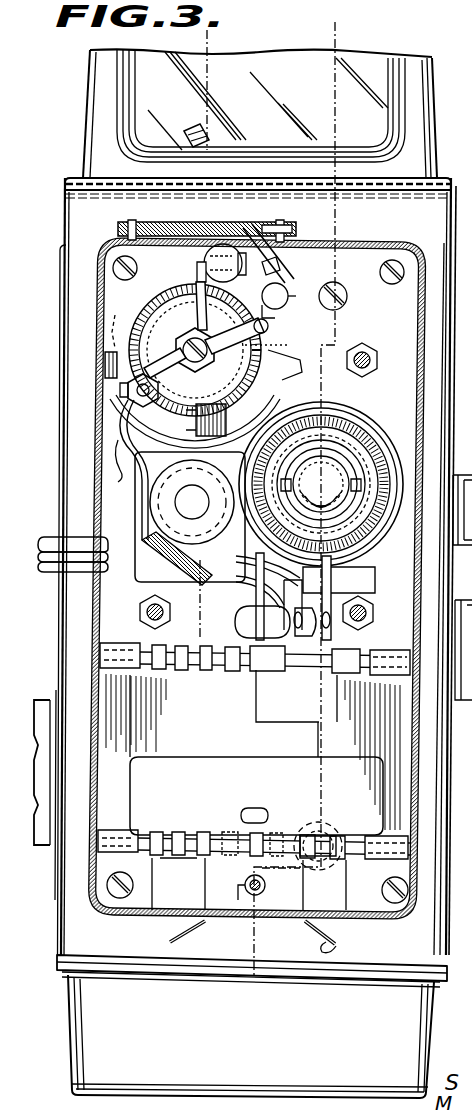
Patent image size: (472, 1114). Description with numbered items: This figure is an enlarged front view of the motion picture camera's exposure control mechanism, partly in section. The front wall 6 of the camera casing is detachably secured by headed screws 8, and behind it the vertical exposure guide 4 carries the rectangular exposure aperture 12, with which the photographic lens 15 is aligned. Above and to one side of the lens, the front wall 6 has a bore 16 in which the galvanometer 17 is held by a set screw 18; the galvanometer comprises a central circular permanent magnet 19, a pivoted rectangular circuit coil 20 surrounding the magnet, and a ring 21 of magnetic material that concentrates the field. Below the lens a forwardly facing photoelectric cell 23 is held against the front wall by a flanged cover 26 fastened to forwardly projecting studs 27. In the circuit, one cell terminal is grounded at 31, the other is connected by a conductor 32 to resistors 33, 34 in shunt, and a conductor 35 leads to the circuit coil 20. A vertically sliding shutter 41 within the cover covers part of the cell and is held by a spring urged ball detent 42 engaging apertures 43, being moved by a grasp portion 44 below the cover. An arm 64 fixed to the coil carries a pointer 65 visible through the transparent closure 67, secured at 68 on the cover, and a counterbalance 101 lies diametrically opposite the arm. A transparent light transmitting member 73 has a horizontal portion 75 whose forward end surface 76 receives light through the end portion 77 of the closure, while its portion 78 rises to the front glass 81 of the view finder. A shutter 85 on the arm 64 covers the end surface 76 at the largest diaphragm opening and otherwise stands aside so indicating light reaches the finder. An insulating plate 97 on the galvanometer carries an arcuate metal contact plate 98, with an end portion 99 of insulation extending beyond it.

The vertical exposure guide 4 is at (188, 40).
The front wall 6 is at (318, 35).
The headed screws 8 is at (392, 282).
The exposure aperture 12 is at (338, 452).
The photographic lens 15 is at (325, 480).
The bore 16 is at (279, 386).
The galvanometer 17 is at (272, 346).
The set screw 18 is at (116, 341).
The central circular permanent magnet 19 is at (176, 332).
The circuit coil 20 is at (200, 312).
The ring of magnetic material 21 is at (288, 356).
The photoelectric cell 23 is at (386, 664).
The flanged cover 26 is at (416, 252).
The forwardly projecting studs 27 is at (368, 347).
The ground connection of photoelectric cell 31 is at (316, 581).
The conductor 32 is at (196, 522).
The resistor 33 is at (203, 480).
The resistor 34 is at (172, 566).
The conductor 35 is at (116, 461).
The shutter 41 is at (212, 762).
The spring urged ball detent 42 is at (290, 903).
The vertically spaced apertures 43 is at (242, 814).
The grasp portion 44 is at (338, 948).
The arm 64 is at (196, 274).
The pointer 65 is at (207, 256).
The transparent closure 67 is at (180, 224).
The securing means of closure 68 is at (126, 226).
The transparent light transmitting member 73 is at (192, 130).
The horizontal portion of light transmitting member 75 is at (284, 286).
The forward end surface 76 is at (283, 305).
The end portion of channel portion 77 is at (410, 88).
The upwardly directed portion of light transmitting member 78 is at (268, 224).
The front glass of view finder 81 is at (143, 138).
The shutter 85 is at (204, 318).
The plate of insulating material 97 is at (166, 377).
The arcuate metal contact plate 98 is at (236, 337).
The end portion of insulating plate 99 is at (136, 470).
The counterbalance 101 is at (223, 401).